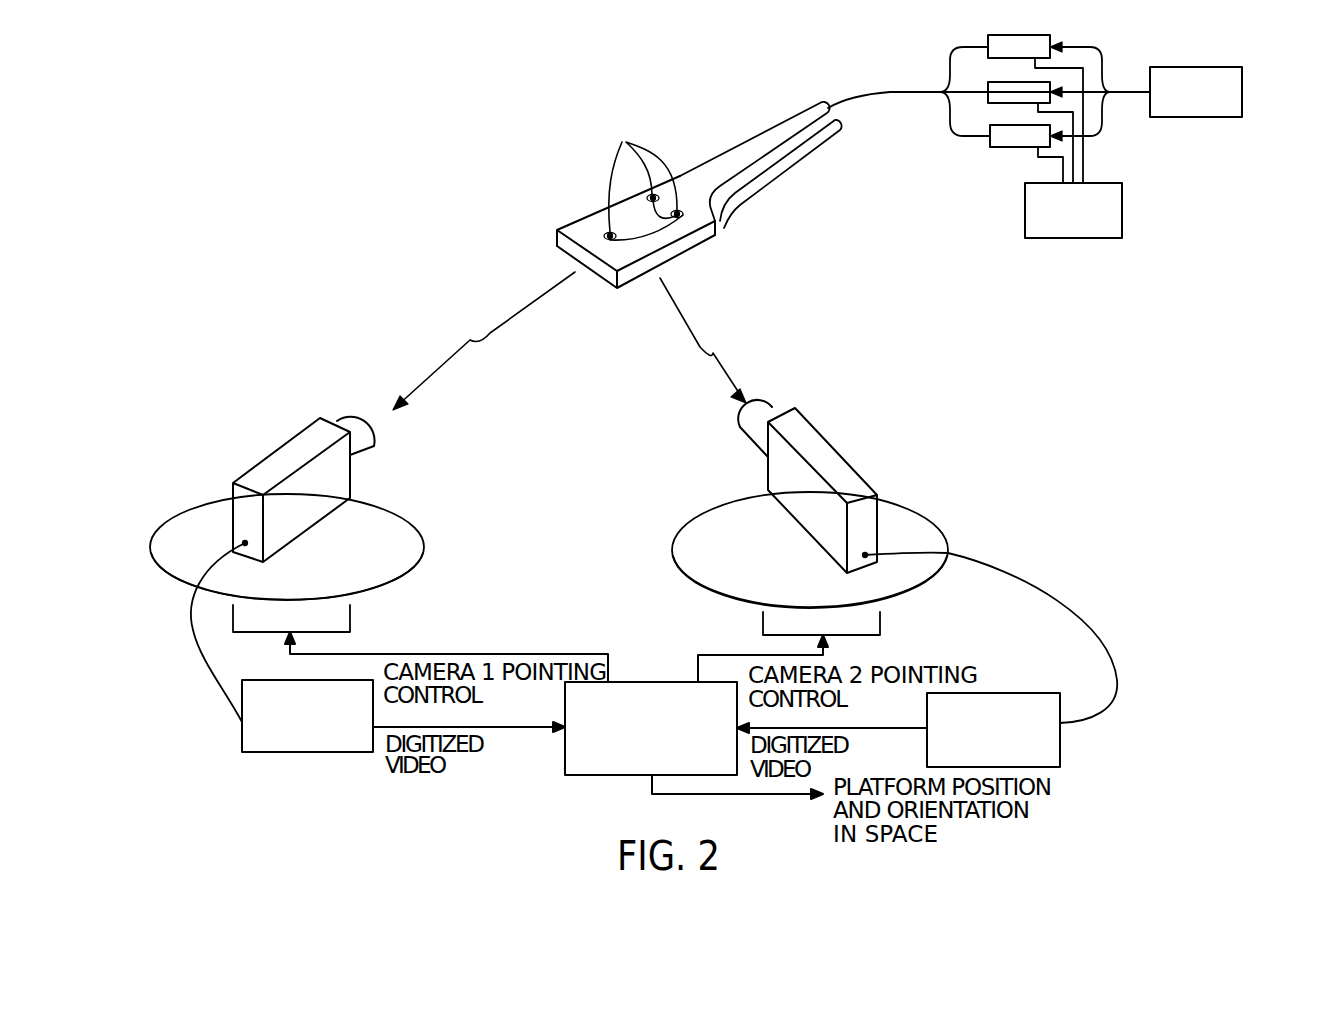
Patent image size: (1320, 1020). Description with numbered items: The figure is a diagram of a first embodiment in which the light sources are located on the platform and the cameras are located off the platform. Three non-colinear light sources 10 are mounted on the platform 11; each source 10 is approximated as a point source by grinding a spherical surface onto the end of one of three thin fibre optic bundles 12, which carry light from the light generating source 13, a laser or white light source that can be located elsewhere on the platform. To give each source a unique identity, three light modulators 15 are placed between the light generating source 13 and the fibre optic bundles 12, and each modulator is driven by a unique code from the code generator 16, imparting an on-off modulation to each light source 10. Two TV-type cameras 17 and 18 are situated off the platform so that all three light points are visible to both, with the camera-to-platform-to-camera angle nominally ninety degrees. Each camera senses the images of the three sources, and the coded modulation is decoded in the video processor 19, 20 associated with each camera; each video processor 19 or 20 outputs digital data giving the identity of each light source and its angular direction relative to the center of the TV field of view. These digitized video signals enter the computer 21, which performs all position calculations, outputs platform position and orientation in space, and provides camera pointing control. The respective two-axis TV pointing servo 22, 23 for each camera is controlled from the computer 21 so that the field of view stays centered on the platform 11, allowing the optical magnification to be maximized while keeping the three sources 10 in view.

The light sources 10 is at (643, 179).
The platform 11 is at (557, 245).
The fibre optic bundles 12 is at (887, 97).
The light generating source 13 is at (1160, 117).
The light modulators 15 is at (1010, 137).
The code generator 16 is at (1122, 220).
The camera 17 is at (310, 428).
The camera 18 is at (855, 477).
The video processor 19 is at (323, 745).
The video processor 20 is at (1057, 747).
The computer 21 is at (587, 768).
The 2-axis TV pointing servo 22 is at (413, 530).
The 2-axis TV pointing servo 23 is at (673, 542).